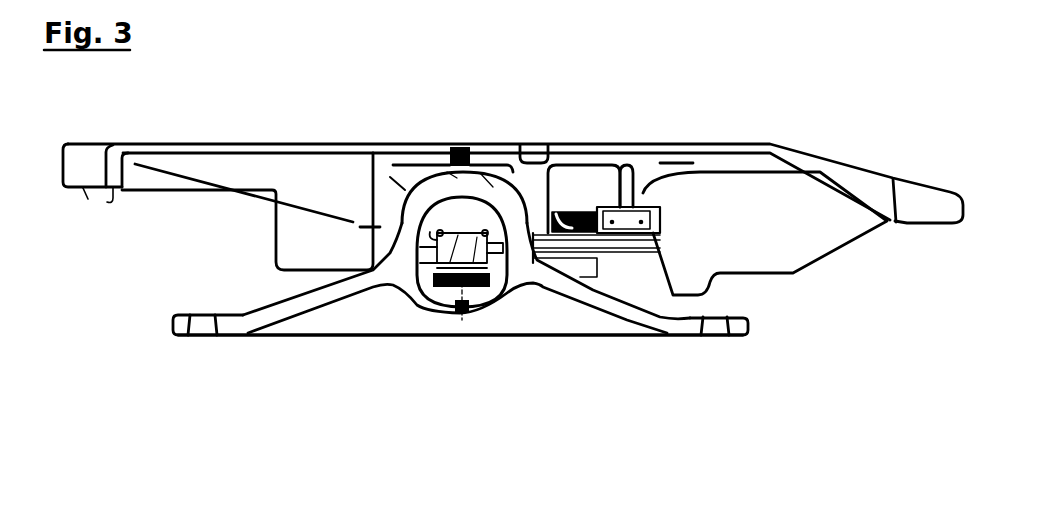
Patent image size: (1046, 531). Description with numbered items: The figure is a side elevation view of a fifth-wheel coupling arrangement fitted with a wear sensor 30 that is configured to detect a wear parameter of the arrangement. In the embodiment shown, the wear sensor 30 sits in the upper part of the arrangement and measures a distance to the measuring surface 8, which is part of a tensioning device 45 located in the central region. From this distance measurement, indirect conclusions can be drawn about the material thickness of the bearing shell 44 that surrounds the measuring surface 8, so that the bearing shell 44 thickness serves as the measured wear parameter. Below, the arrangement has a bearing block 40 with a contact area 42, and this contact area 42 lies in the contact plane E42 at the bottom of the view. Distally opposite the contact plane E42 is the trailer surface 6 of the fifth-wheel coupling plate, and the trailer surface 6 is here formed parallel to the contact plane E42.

The trailer surface 6 is at (432, 143).
The measuring surface 8 is at (462, 233).
The wear sensor 30 is at (470, 153).
The bearing block 40 is at (377, 277).
The contact area 42 is at (233, 340).
The contact plane E42 is at (258, 488).
The bearing shell 44 is at (428, 172).
The tensioning device 45 is at (467, 253).